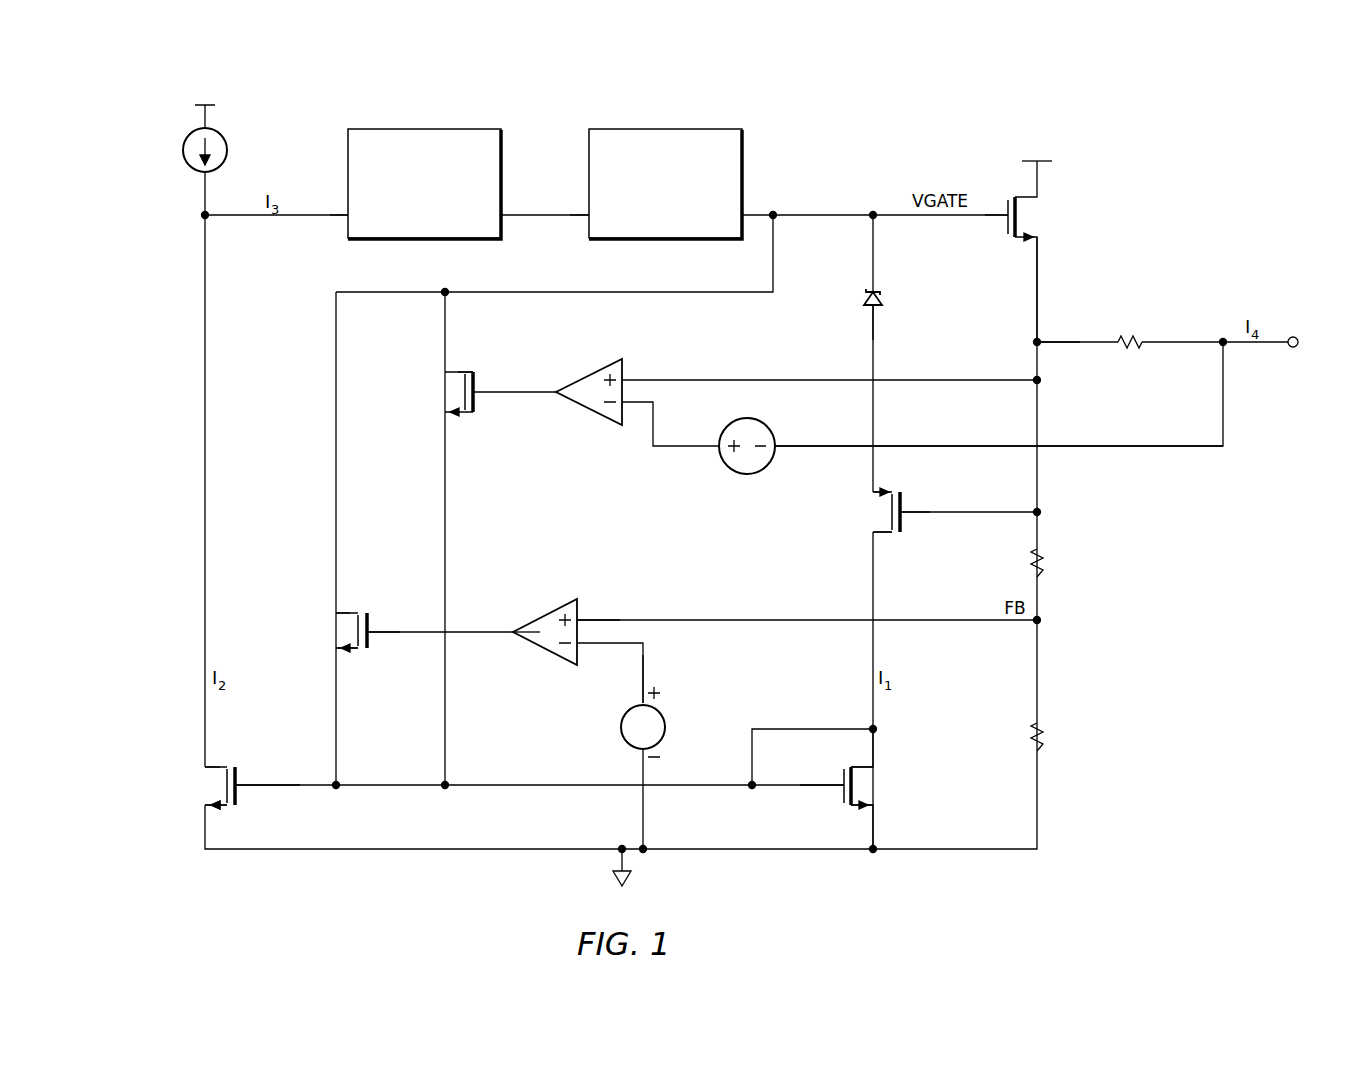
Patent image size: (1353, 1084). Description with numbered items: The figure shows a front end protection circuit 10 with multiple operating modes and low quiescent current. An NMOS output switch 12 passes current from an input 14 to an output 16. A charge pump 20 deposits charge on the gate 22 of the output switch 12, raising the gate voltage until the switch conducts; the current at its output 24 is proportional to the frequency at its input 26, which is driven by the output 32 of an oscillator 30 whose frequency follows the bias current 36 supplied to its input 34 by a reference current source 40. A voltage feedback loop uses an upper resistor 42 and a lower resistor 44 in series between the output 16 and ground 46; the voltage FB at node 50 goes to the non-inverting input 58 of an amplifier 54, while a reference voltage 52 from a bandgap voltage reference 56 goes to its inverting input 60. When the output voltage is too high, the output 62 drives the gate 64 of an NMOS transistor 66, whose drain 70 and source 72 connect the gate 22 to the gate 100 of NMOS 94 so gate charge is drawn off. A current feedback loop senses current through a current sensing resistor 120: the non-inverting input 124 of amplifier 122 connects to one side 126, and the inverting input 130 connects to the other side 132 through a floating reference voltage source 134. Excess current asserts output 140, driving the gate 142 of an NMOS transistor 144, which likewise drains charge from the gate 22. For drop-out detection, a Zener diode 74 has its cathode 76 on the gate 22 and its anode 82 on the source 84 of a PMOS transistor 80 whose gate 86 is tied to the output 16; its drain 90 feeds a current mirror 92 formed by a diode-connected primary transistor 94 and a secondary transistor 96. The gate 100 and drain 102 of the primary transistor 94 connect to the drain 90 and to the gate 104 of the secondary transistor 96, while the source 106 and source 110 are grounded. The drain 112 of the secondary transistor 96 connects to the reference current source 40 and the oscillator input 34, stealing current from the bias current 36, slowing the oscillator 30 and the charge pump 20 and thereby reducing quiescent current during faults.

The front end protection circuit 10 is at (896, 120).
The output switch 12 is at (1003, 172).
The input 14 is at (1048, 162).
The output 16 is at (1050, 340).
The charge pump 20 is at (690, 129).
The gate 22 is at (1005, 226).
The charge pump output 24 is at (748, 214).
The charge pump input 26 is at (583, 218).
The oscillator 30 is at (428, 129).
The oscillator output 32 is at (511, 214).
The oscillator input 34 is at (343, 220).
The bias current 36 is at (243, 220).
The reference current source 40 is at (183, 150).
The upper resistor 42 is at (1030, 563).
The lower resistor 44 is at (1030, 736).
The ground 46 is at (612, 880).
The node 50 is at (1030, 625).
The reference voltage 52 is at (648, 661).
The amplifier 54 is at (546, 608).
The bandgap voltage reference 56 is at (620, 727).
The non-inverting input 58 is at (584, 614).
The inverting input 60 is at (586, 648).
The amplifier output 62 is at (515, 639).
The gate 64 is at (372, 620).
The NMOS transistor 66 is at (371, 600).
The transistor drain 70 is at (335, 608).
The source 72 is at (335, 653).
The Zener diode 74 is at (862, 296).
The cathode 76 is at (878, 291).
The PMOS transistor 80 is at (904, 545).
The anode 82 is at (876, 309).
The source 84 is at (870, 490).
The gate 86 is at (905, 500).
The drain 90 is at (870, 535).
The current mirror 92 is at (185, 790).
The primary transistor 94 is at (830, 800).
The secondary transistor 96 is at (251, 800).
The gate 100 is at (840, 778).
The drain 102 is at (875, 758).
The gate 104 is at (240, 772).
The source 106 is at (875, 812).
The source 110 is at (203, 812).
The drain 112 is at (203, 760).
The current sensing resistor 120 is at (1128, 338).
The amplifier 122 is at (590, 410).
The non-inverting input 124 is at (720, 379).
The one side 126 is at (1060, 345).
The inverting input 130 is at (685, 448).
The other side 132 is at (1185, 340).
The floating reference voltage source 134 is at (747, 475).
The amplifier output 140 is at (520, 395).
The gate 142 is at (478, 378).
The NMOS transistor 144 is at (461, 362).